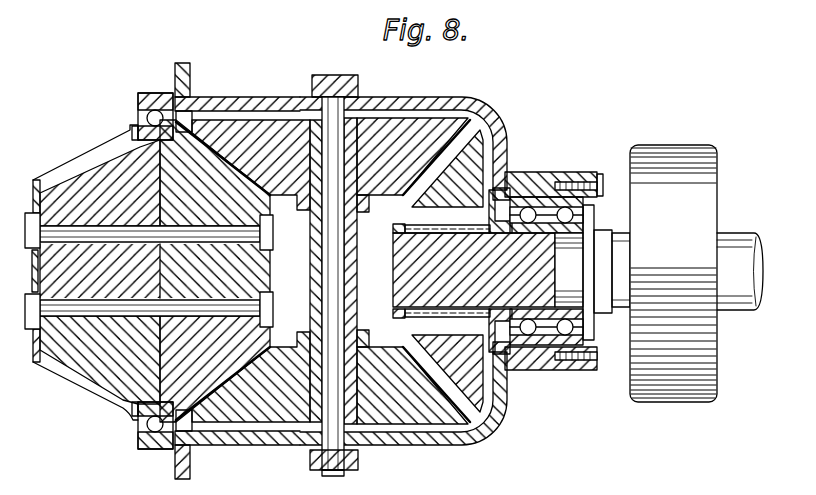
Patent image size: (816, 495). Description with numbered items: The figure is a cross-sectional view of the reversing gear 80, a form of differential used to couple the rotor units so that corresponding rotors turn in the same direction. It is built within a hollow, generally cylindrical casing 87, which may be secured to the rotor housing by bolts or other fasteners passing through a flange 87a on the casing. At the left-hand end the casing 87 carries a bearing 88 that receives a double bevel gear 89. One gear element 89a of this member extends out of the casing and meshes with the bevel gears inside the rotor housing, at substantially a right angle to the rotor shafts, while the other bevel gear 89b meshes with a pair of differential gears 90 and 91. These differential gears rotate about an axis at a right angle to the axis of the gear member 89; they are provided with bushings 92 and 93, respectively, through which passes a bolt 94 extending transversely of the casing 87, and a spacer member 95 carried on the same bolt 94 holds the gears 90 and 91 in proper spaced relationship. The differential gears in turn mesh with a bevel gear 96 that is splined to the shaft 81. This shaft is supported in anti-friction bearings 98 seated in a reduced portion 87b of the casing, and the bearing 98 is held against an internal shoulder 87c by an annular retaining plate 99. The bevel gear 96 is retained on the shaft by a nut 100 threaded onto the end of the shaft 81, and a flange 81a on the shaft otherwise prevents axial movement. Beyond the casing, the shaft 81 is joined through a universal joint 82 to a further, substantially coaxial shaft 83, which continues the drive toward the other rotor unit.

The reversing gear mechanism 80 is at (466, 96).
The shaft 81 is at (627, 231).
The flange 81a is at (596, 320).
The universal joint 82 is at (680, 147).
The shaft 83 is at (737, 232).
The casing 87 is at (265, 104).
The flange 87a is at (182, 63).
The reduced portion 87b is at (533, 190).
The internal shoulder 87c is at (503, 199).
The bearing 88 is at (138, 107).
The double bevel gear 89 is at (137, 177).
The gear element 89a is at (68, 173).
The bevel gear 89b is at (200, 170).
The differential gear 90 is at (275, 137).
The differential gear 91 is at (277, 410).
The bushing 92 is at (382, 112).
The bushing 93 is at (360, 450).
The bolt 94 is at (328, 107).
The spacer member 95 is at (318, 265).
The bevel gear 96 is at (506, 196).
The anti-friction bearings 98 is at (546, 340).
The annular retaining plate 99 is at (599, 174).
The nut 100 is at (393, 229).